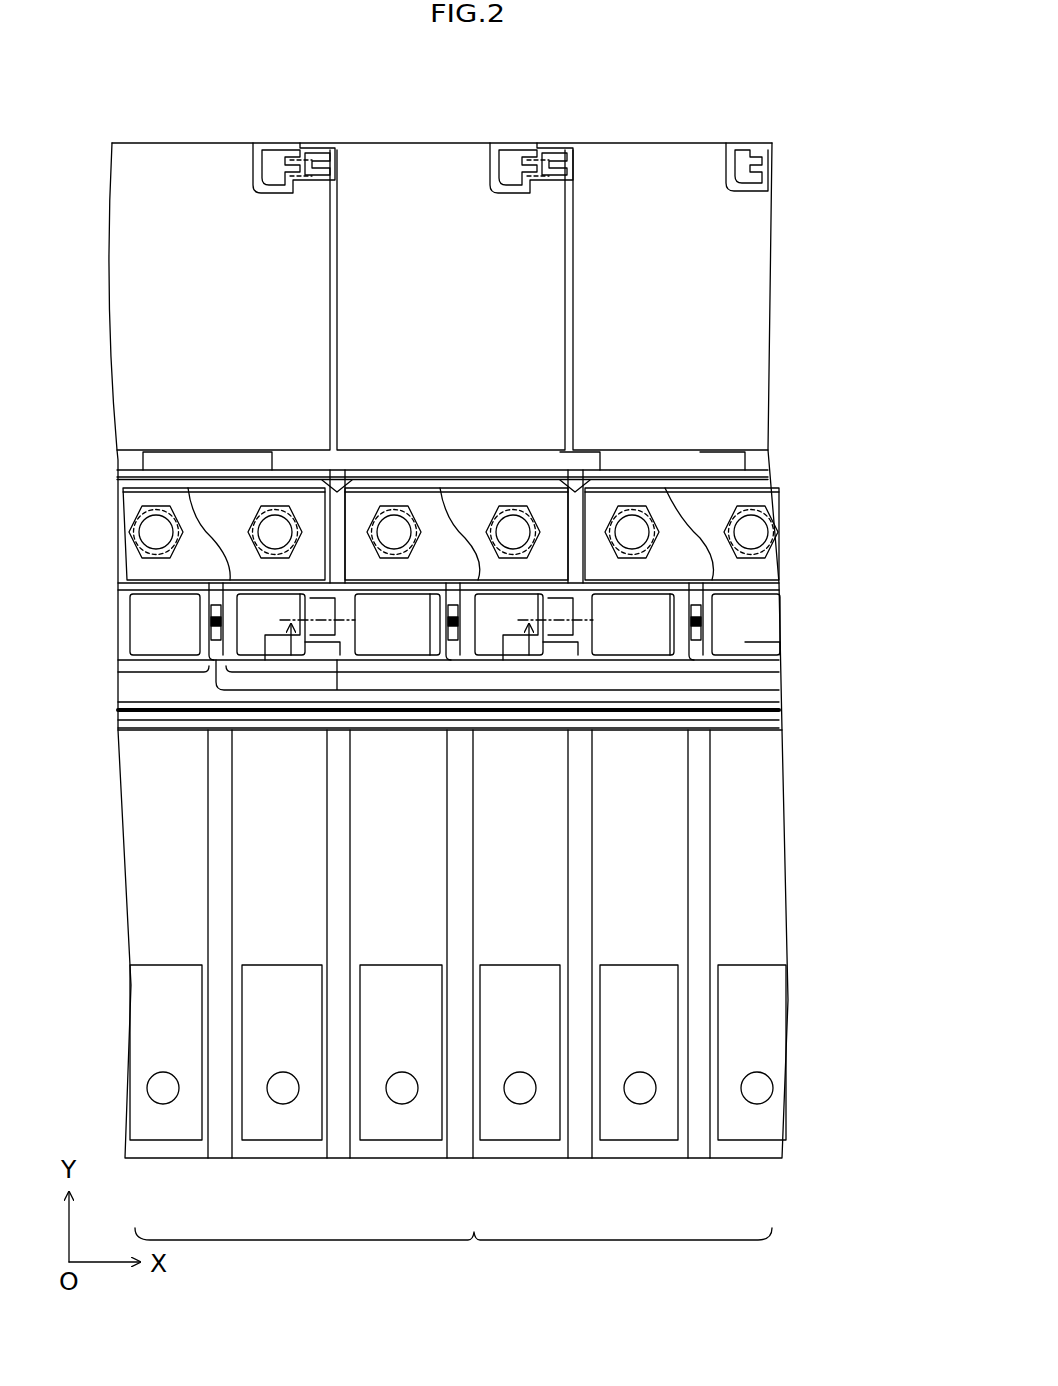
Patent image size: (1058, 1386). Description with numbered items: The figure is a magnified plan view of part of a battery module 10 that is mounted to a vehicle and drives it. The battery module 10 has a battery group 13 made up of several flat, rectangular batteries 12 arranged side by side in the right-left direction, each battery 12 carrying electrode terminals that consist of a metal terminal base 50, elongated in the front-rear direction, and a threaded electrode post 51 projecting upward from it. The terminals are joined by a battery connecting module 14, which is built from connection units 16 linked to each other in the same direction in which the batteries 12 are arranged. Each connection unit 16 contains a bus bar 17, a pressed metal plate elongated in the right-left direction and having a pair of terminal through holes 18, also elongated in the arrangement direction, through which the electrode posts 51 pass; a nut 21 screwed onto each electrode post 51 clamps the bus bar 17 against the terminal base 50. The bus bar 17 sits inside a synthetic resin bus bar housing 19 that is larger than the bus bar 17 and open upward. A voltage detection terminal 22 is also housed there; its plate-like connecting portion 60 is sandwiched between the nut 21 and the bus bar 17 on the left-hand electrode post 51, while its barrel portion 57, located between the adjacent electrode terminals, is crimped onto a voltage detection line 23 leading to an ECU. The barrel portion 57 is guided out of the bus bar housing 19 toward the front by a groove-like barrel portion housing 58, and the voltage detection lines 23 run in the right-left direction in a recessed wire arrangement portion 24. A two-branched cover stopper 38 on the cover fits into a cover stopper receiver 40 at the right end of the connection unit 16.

The battery module 10 is at (790, 306).
The battery 12 is at (506, 983).
The battery group 13 is at (453, 1254).
The battery connecting module 14 is at (735, 347).
The connection unit 16 is at (160, 170).
The bus bar 17 is at (455, 497).
The terminal through hole 18 is at (362, 520).
The bus bar housing 19 is at (470, 490).
The nut 21 is at (393, 527).
The voltage detection terminal 22 is at (705, 455).
The voltage detection line 23 is at (748, 655).
The wire arrangement portion 24 is at (665, 680).
The cover stopper 38 is at (265, 178).
The cover stopper receiver 40 is at (300, 143).
The terminal base 50 is at (762, 1010).
The electrode post 51 is at (395, 530).
The barrel portion 57 is at (705, 600).
The barrel portion housing 58 is at (705, 620).
The connecting portion 60 is at (672, 497).